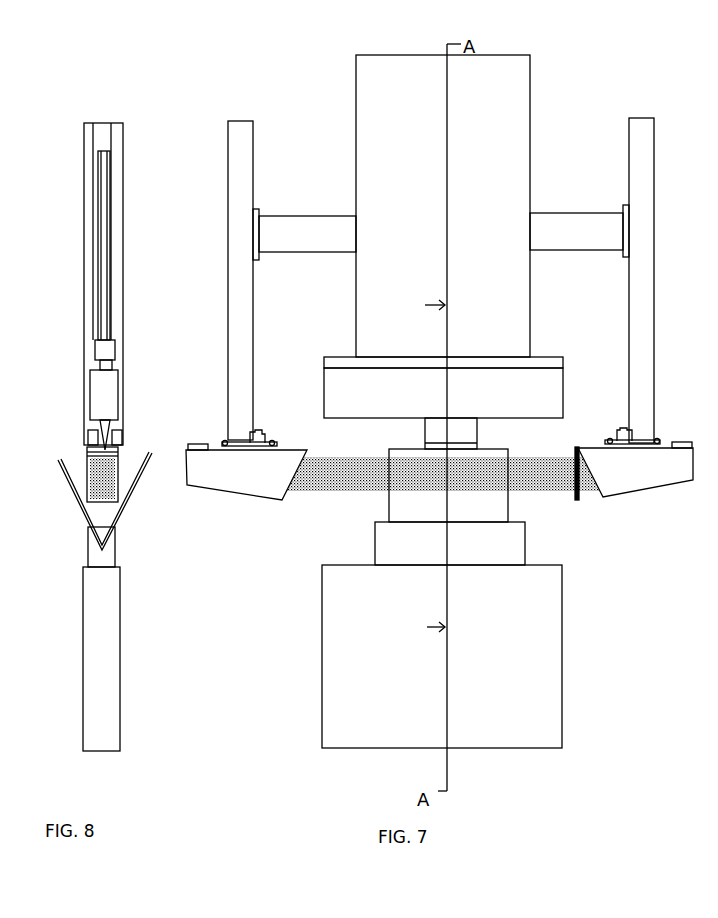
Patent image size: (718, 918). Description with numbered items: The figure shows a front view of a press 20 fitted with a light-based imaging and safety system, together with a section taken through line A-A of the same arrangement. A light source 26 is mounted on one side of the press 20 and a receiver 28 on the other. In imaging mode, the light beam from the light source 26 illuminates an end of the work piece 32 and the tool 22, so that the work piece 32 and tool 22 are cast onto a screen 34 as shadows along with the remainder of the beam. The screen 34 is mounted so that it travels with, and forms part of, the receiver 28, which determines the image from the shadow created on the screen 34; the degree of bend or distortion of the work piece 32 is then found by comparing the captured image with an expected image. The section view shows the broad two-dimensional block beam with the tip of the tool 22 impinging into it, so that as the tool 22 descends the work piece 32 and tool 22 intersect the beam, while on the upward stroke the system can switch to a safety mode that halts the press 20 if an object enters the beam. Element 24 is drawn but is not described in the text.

In FIG. 8, the press 20 is at (130, 148).
In FIG. 7, the press 20 is at (480, 171).
In FIG. 7, the tool 22 is at (482, 442).
In FIG. 7, the support block 24 is at (528, 545).
In FIG. 7, the light source 26 is at (262, 495).
In FIG. 7, the receiver 28 is at (655, 470).
In FIG. 8, the work piece 32 is at (118, 520).
In FIG. 7, the work piece 32 is at (385, 510).
In FIG. 7, the screen 34 is at (580, 502).